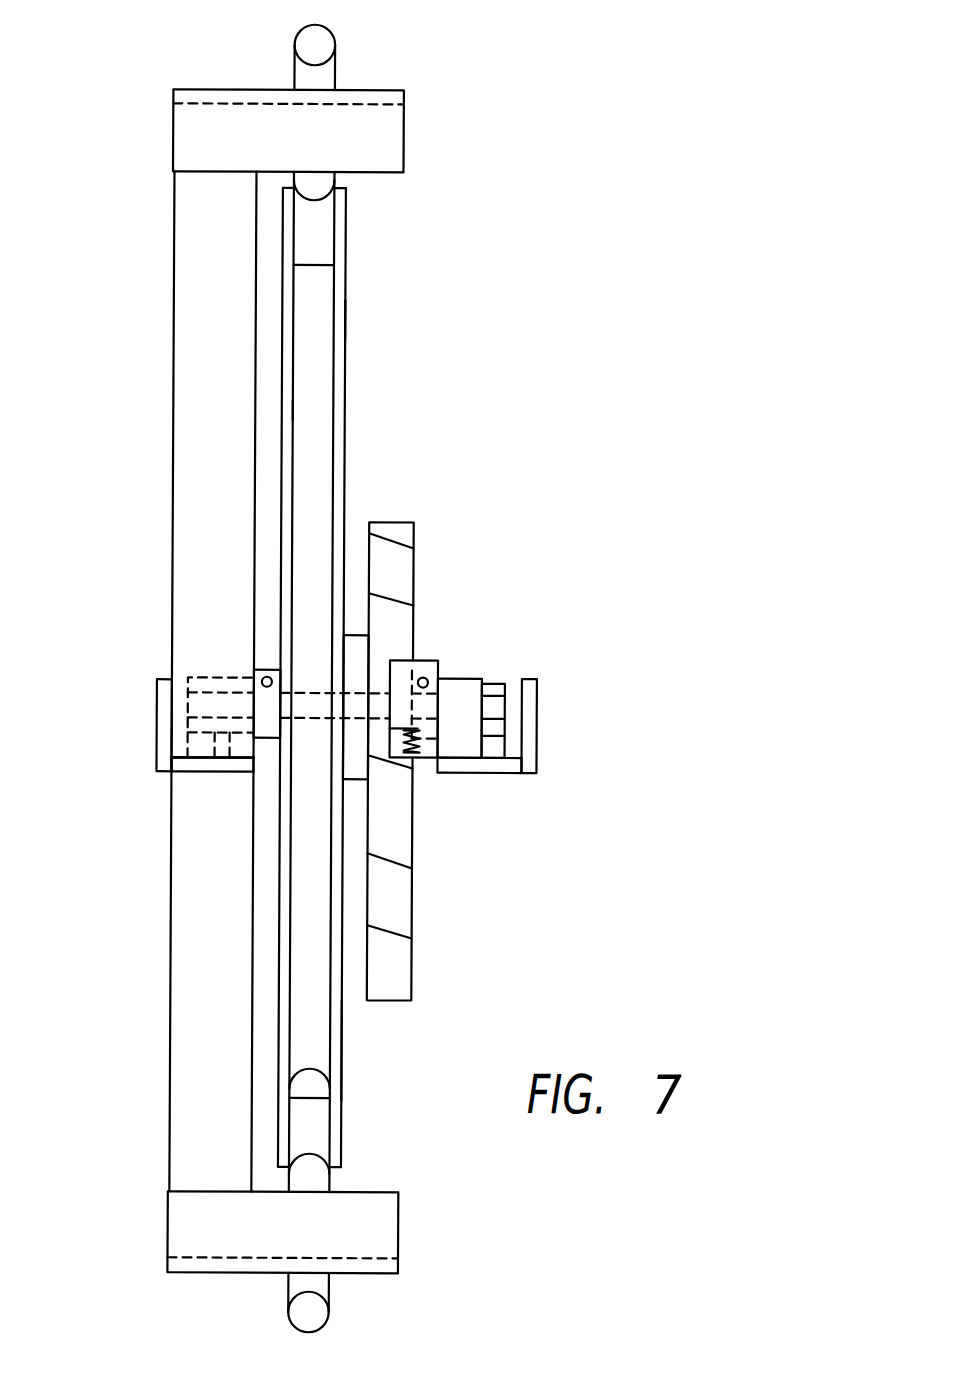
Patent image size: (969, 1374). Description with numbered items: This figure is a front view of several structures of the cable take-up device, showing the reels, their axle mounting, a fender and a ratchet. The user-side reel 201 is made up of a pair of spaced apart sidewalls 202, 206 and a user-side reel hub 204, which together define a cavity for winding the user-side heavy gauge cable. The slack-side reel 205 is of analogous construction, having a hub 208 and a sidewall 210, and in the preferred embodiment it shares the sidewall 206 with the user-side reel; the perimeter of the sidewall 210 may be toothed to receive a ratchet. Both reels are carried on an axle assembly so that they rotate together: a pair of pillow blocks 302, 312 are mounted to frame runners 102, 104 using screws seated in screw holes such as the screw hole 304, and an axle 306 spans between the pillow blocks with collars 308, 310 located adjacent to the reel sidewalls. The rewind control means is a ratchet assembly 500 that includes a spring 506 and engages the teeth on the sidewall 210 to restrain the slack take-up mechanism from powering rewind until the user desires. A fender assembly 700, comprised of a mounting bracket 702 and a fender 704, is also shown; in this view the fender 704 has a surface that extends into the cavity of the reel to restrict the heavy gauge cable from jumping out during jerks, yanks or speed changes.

The fender assembly 700 is at (229, 60).
The mounting bracket 702 is at (237, 90).
The fender 704 is at (335, 38).
The sidewall 206 is at (363, 216).
The user-side reel hub 204 is at (311, 262).
The user-side reel 201 is at (326, 326).
The sidewall 202 is at (280, 288).
The slack-side reel 205 is at (355, 1000).
The hub 208 is at (352, 633).
The sidewall 210 is at (422, 531).
The ratchet assembly 500 is at (402, 662).
The spring 506 is at (413, 757).
The collar 310 is at (437, 680).
The pillow block 312 is at (470, 680).
The runner 104 is at (540, 703).
The runner 102 is at (157, 721).
The screw hole 304 is at (222, 760).
The pillow block 302 is at (210, 678).
The collar 308 is at (268, 670).
The axle 306 is at (312, 692).